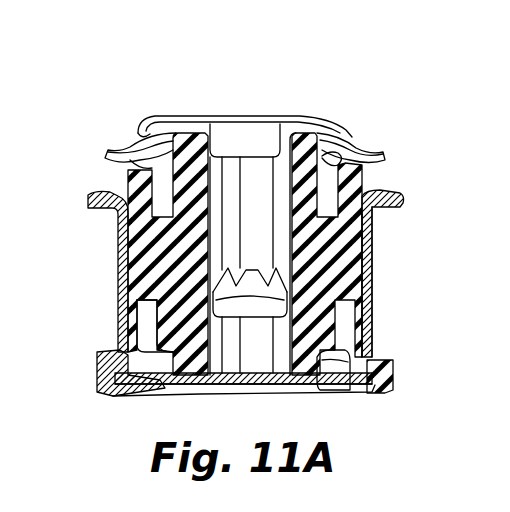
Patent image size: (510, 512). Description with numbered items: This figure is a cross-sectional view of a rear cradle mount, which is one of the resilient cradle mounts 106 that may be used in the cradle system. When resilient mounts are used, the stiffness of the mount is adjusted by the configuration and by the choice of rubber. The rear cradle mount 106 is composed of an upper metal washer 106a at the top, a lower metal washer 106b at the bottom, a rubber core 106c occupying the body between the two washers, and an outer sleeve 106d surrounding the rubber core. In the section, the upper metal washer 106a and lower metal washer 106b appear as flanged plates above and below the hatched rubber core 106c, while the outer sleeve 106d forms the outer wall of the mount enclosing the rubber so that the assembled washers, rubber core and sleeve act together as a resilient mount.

The resilient cradle mount 106 is at (266, 98).
The upper metal washer 106a is at (340, 134).
The lower metal washer 106b is at (360, 402).
The rubber core 106c is at (370, 300).
The outer sleeve 106d is at (370, 253).